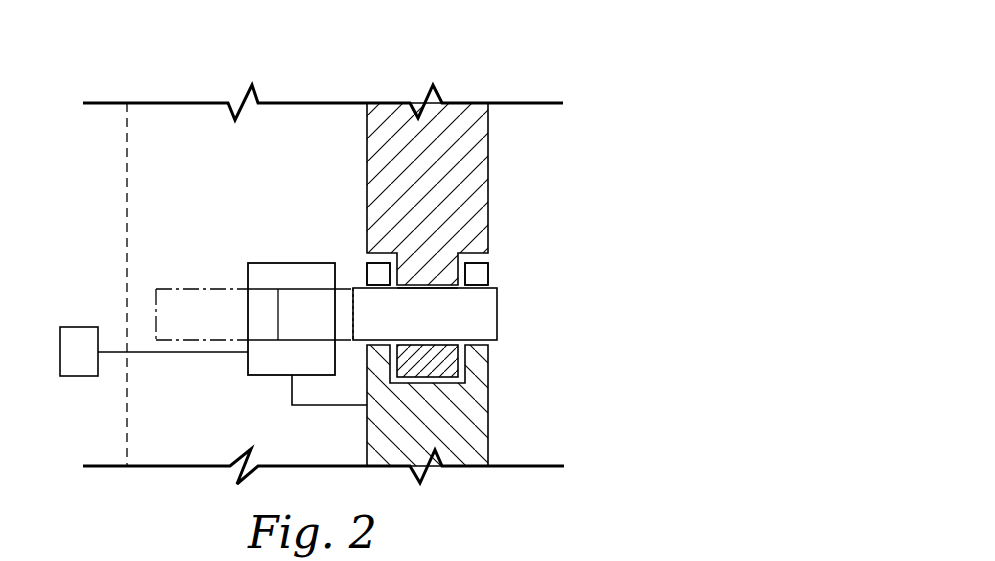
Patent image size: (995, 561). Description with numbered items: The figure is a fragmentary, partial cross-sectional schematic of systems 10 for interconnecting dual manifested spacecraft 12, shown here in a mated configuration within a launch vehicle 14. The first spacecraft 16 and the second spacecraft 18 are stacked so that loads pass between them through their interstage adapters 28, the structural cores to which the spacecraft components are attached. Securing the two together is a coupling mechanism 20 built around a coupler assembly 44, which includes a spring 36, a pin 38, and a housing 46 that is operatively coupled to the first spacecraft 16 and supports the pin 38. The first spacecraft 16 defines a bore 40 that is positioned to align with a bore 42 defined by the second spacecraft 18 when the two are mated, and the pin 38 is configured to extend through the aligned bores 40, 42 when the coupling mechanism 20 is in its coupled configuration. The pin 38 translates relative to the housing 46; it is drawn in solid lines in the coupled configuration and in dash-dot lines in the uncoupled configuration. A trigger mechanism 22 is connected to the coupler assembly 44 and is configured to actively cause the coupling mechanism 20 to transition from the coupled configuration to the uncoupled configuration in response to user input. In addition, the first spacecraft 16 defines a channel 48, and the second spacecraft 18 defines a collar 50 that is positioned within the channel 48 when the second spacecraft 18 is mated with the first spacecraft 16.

The systems for interconnecting dual manifested spacecraft 10 is at (580, 65).
The dual manifested spacecraft 12 is at (562, 132).
The launch vehicle 14 is at (126, 225).
The first spacecraft 16 is at (488, 392).
The second spacecraft 18 is at (488, 175).
The coupling mechanism 20 is at (302, 181).
The trigger mechanism 22 is at (78, 377).
The interstage adapter 28 is at (488, 210).
The spring 36 is at (272, 360).
The pin 38 is at (297, 288).
The bore 40 is at (480, 343).
The bore 42 is at (433, 285).
The coupler assembly 44 is at (294, 226).
The housing 46 is at (318, 263).
The channel 48 is at (433, 380).
The collar 50 is at (462, 273).